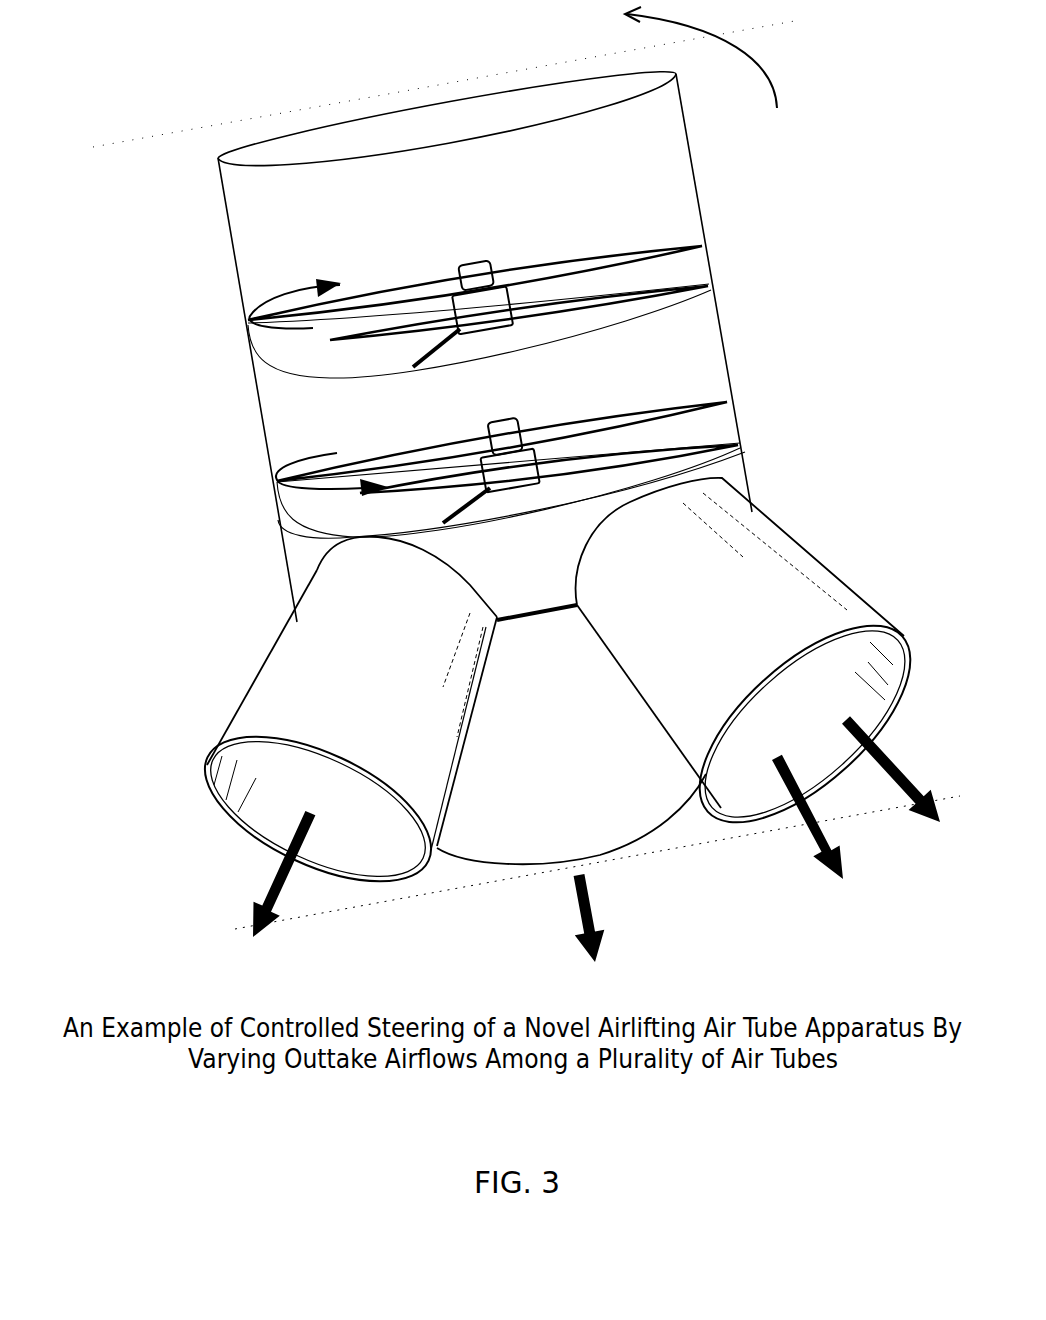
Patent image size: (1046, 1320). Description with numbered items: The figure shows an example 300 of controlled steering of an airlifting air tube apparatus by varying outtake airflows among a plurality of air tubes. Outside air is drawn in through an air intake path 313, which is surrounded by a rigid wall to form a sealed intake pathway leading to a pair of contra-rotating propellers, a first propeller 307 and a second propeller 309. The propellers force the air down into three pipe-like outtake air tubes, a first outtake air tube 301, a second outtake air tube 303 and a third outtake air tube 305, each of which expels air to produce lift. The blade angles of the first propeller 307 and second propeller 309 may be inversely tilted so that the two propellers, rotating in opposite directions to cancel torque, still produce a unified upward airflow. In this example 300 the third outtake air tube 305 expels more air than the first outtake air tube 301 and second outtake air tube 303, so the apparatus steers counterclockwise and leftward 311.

The example of controlled steering 300 is at (501, 568).
The first outtake air tube 301 is at (304, 684).
The second outtake air tube 303 is at (571, 783).
The third outtake air tube 305 is at (783, 604).
The first propeller 307 is at (479, 469).
The second propeller 309 is at (450, 312).
The counterclockwise and leftward steering 311 is at (711, 77).
The air intake path 313 is at (215, 221).